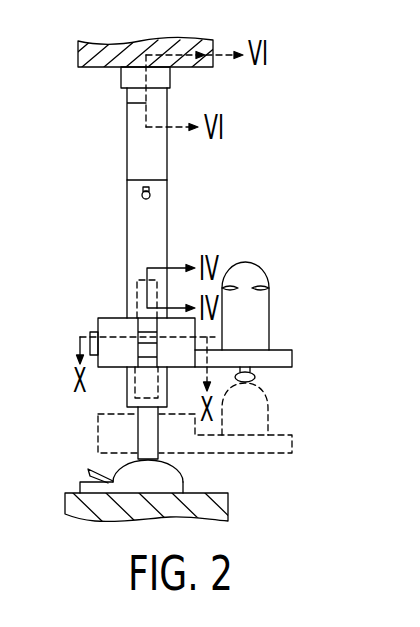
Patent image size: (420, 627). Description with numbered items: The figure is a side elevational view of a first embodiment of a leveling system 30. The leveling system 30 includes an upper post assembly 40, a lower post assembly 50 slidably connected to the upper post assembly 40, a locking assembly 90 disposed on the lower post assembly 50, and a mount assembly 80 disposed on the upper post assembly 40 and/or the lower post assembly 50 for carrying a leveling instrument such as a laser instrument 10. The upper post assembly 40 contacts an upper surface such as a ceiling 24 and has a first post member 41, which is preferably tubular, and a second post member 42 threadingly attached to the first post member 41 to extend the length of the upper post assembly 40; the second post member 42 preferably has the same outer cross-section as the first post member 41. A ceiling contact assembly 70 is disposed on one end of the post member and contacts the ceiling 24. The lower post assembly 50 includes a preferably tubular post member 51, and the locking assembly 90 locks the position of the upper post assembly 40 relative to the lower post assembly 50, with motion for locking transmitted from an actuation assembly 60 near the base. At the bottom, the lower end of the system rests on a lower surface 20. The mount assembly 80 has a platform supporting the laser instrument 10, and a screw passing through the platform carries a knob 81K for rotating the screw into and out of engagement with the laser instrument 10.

The laser instrument 10 is at (257, 315).
The lower support plate 20 is at (222, 514).
The ceiling 24 is at (103, 58).
The leveling system 30 is at (105, 205).
The upper post assembly 40 is at (158, 273).
The first post member 41 is at (138, 222).
The second post member 42 is at (157, 155).
The lower post assembly 50 is at (122, 440).
The post member 51 is at (137, 411).
The actuation assembly 60 is at (170, 485).
The ceiling contact assembly 70 is at (125, 82).
The mount assembly 80 is at (104, 324).
The knob 81K is at (255, 377).
The locking assembly 90 is at (137, 287).